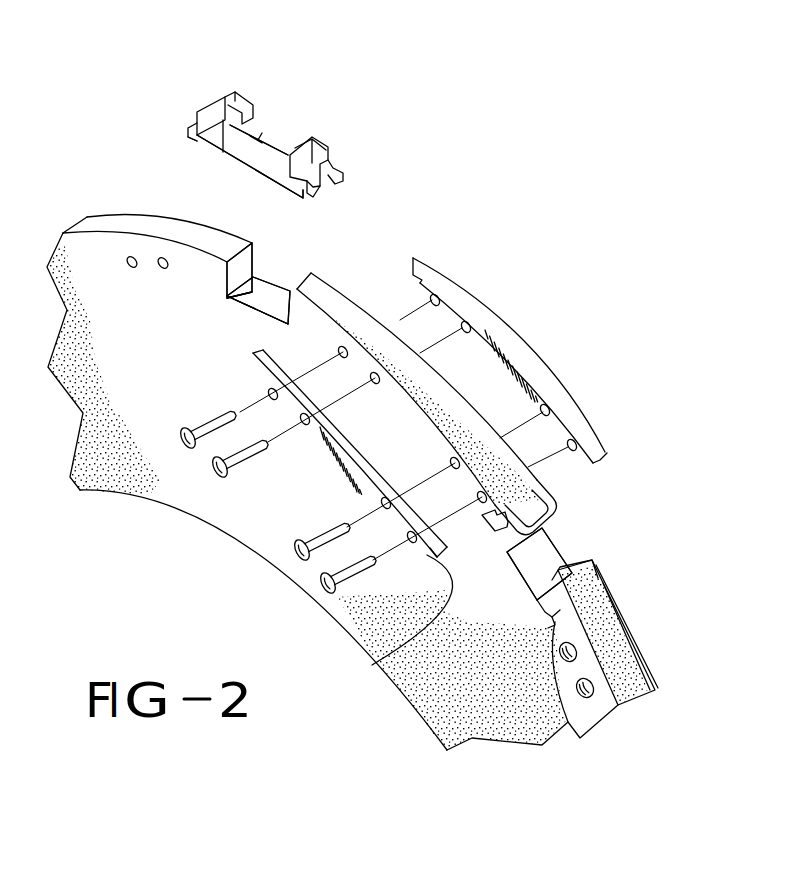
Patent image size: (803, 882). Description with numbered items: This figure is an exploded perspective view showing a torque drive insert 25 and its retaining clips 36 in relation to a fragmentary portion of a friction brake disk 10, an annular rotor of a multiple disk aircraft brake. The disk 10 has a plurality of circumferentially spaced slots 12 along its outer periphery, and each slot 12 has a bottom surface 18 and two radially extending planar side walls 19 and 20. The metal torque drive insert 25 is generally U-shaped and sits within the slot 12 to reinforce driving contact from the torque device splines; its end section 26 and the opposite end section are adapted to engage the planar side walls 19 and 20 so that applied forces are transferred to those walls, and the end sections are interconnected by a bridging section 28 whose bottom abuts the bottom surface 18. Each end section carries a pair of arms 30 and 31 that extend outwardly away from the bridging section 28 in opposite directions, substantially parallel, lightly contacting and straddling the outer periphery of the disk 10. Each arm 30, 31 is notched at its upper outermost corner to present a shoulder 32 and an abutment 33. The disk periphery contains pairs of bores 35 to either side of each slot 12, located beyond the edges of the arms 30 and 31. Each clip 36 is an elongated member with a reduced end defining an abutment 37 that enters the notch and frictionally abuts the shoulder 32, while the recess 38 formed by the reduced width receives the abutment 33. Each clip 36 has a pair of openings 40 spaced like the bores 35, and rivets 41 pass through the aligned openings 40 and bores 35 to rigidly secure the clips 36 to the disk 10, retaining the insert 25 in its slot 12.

The friction brake disk 10 is at (253, 553).
The slot 12 is at (265, 275).
The bottom surface 18 is at (272, 302).
The planar side wall 19 is at (245, 296).
The planar side wall 20 is at (297, 285).
The torque drive insert 25 is at (268, 128).
The end section 26 is at (262, 133).
The bridging section 28 is at (277, 153).
The arm 30 is at (222, 108).
The arm 31 is at (333, 163).
The shoulder 32 is at (190, 126).
The abutment 33 is at (188, 133).
The bore 35 is at (163, 268).
The clip 36 is at (500, 324).
The abutment 37 is at (428, 283).
The recess 38 is at (410, 645).
The opening 40 is at (273, 399).
The rivet 41 is at (190, 450).